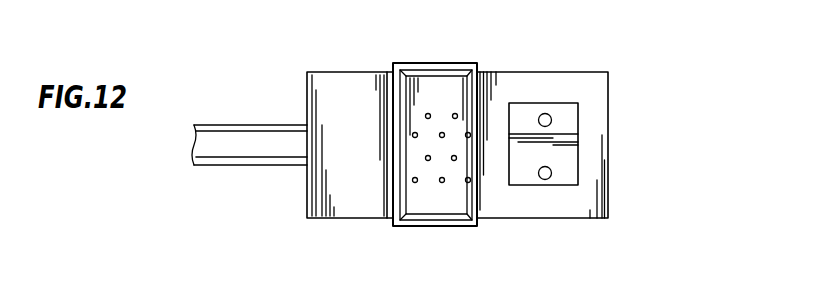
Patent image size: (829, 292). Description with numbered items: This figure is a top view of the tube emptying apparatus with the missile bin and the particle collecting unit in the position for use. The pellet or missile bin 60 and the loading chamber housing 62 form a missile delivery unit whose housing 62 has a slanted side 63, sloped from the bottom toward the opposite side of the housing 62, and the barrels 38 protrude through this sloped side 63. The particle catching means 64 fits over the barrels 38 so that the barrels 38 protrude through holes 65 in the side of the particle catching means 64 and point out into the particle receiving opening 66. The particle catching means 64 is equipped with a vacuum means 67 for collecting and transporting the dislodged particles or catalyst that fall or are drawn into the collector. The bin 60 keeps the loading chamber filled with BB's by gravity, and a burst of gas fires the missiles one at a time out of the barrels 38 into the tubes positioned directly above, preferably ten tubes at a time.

The barrels 38 is at (458, 115).
The missile bin 60 is at (572, 127).
The loading chamber housing 62 is at (600, 193).
The slanted side 63 is at (467, 216).
The particle catching means 64 is at (354, 87).
The holes 65 is at (452, 113).
The particle receiving opening 66 is at (444, 144).
The vacuum means 67 is at (245, 122).